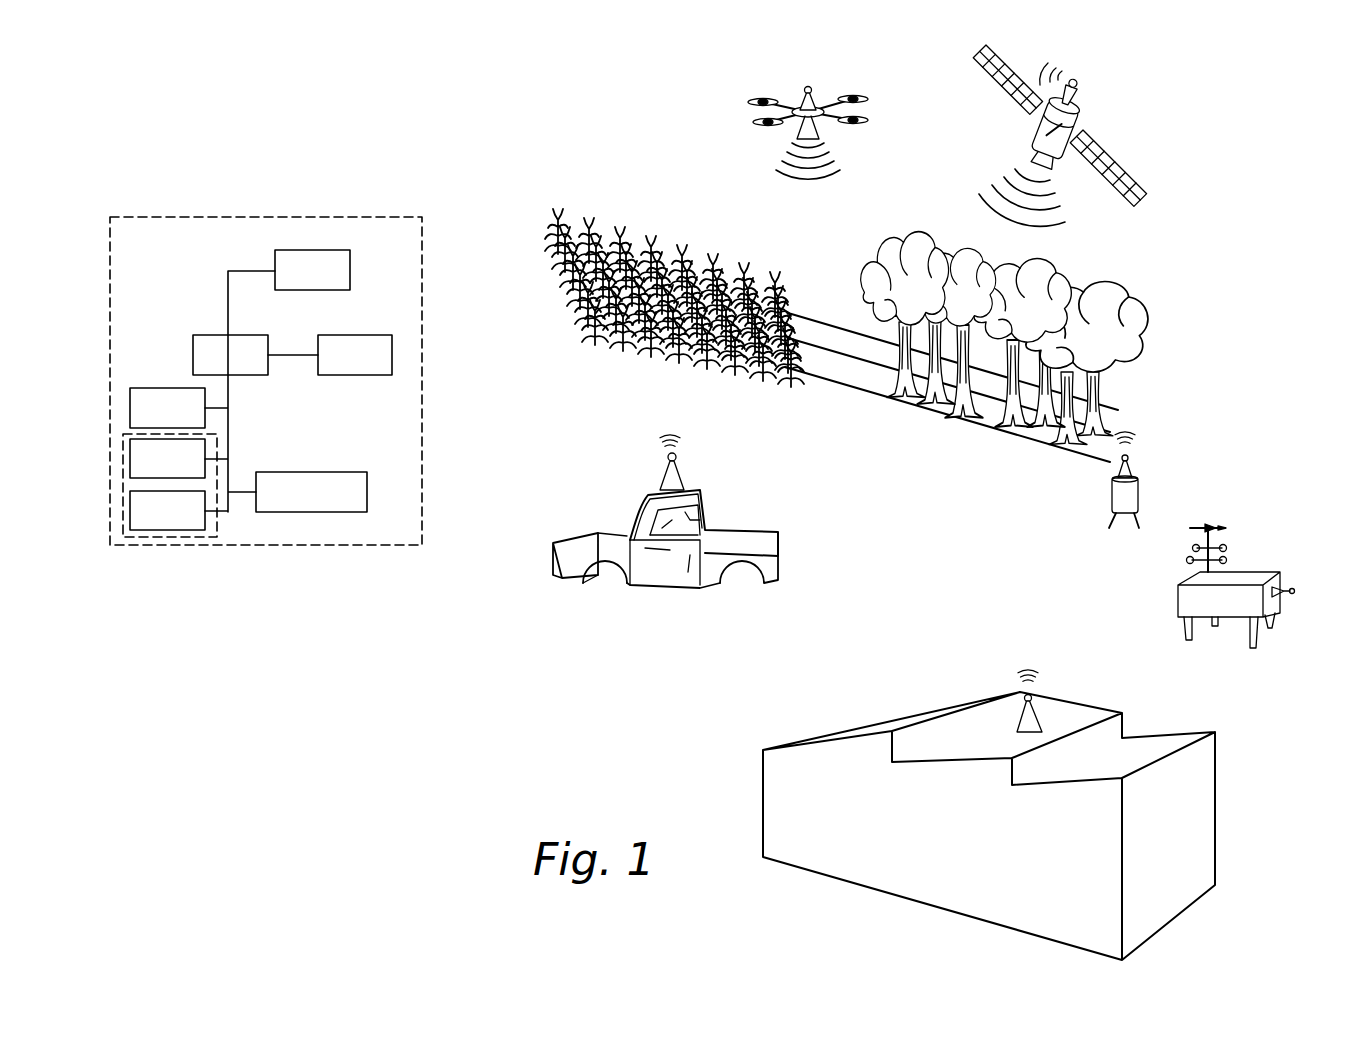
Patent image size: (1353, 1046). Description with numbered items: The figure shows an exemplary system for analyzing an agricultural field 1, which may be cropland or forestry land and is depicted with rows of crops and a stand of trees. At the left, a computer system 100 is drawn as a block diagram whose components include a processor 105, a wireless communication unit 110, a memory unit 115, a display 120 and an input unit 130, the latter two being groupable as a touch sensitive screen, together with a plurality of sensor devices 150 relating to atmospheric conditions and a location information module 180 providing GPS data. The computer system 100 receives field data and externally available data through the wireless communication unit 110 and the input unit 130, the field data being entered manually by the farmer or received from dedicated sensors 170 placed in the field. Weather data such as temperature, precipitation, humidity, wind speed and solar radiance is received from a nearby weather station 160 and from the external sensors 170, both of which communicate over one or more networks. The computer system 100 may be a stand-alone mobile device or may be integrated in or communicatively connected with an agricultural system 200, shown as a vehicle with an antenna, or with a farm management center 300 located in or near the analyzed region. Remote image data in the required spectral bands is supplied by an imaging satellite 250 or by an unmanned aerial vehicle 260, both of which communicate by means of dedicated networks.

The agricultural field 1 is at (826, 294).
The computer system 100 is at (176, 261).
The processor 105 is at (247, 366).
The wireless communication unit 110 is at (331, 281).
The memory unit 115 is at (184, 419).
The display 120 is at (184, 470).
The input unit 130 is at (184, 522).
The sensor devices 150 is at (373, 366).
The weather station 160 is at (1236, 600).
The sensors 170 is at (1133, 495).
The location information module 180 is at (311, 492).
The agricultural system 200 is at (692, 528).
The imaging satellite 250 is at (1080, 118).
The unmanned aerial vehicle 260 is at (800, 104).
The farm management center 300 is at (979, 819).